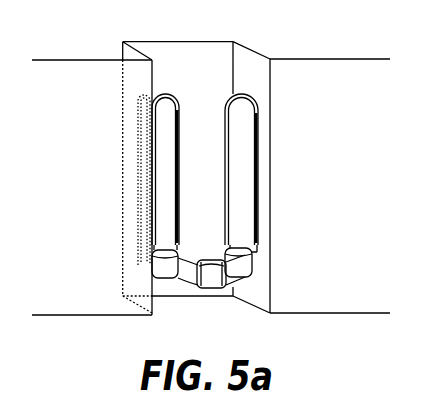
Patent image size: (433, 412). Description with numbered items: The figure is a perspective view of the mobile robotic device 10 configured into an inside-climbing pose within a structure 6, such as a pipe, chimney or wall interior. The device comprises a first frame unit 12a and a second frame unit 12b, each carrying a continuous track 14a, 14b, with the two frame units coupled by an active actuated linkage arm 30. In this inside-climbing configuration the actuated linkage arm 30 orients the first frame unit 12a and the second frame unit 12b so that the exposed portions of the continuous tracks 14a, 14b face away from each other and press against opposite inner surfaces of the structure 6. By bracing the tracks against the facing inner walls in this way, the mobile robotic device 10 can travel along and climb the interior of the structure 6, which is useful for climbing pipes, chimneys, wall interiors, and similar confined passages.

The structure 6 is at (205, 59).
The mobile robotic device 10 is at (200, 86).
The first frame unit 12a is at (163, 136).
The second frame unit 12b is at (243, 137).
The continuous track 14a is at (140, 183).
The continuous track 14b is at (257, 185).
The active actuated linkage arm 30 is at (262, 290).